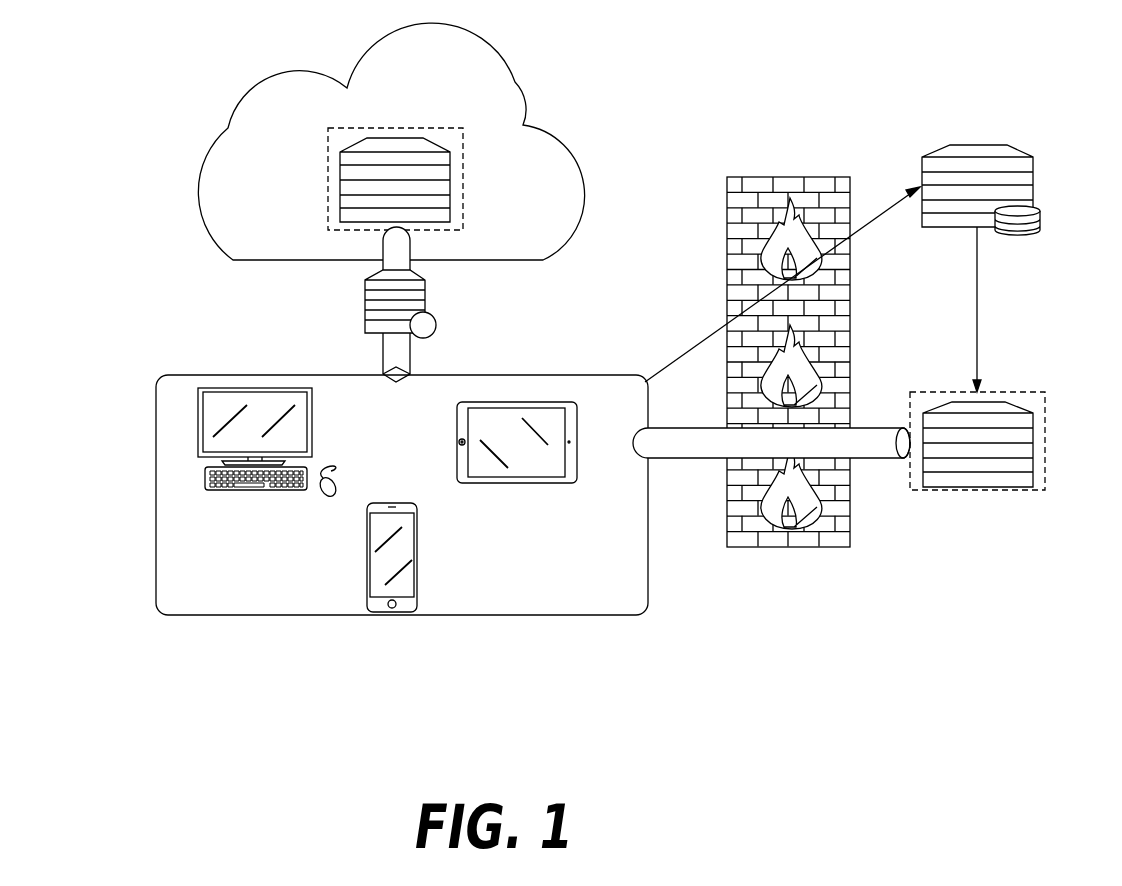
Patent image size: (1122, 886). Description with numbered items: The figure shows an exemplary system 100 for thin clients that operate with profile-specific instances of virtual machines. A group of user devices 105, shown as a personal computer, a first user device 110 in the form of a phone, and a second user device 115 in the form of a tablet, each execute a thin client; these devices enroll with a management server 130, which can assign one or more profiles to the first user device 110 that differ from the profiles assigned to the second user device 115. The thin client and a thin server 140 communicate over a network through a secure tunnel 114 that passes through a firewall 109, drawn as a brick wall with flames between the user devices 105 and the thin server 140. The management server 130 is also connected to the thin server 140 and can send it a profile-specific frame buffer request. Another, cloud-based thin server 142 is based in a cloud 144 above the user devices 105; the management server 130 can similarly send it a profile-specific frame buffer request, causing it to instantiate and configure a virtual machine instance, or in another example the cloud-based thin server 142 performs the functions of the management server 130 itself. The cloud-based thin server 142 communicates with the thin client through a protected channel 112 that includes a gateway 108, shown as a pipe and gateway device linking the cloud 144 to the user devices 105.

The system 100 is at (673, 685).
The user devices 105 is at (277, 560).
The gateway 108 is at (365, 280).
The firewall 109 is at (788, 547).
The first user device 110 is at (417, 577).
The protected channel 112 is at (383, 338).
The secure tunnel 114 is at (692, 459).
The second user device 115 is at (520, 483).
The management server 130 is at (1033, 173).
The thin server 140 is at (1045, 437).
The cloud-based thin server 142 is at (463, 187).
The cloud 144 is at (515, 82).